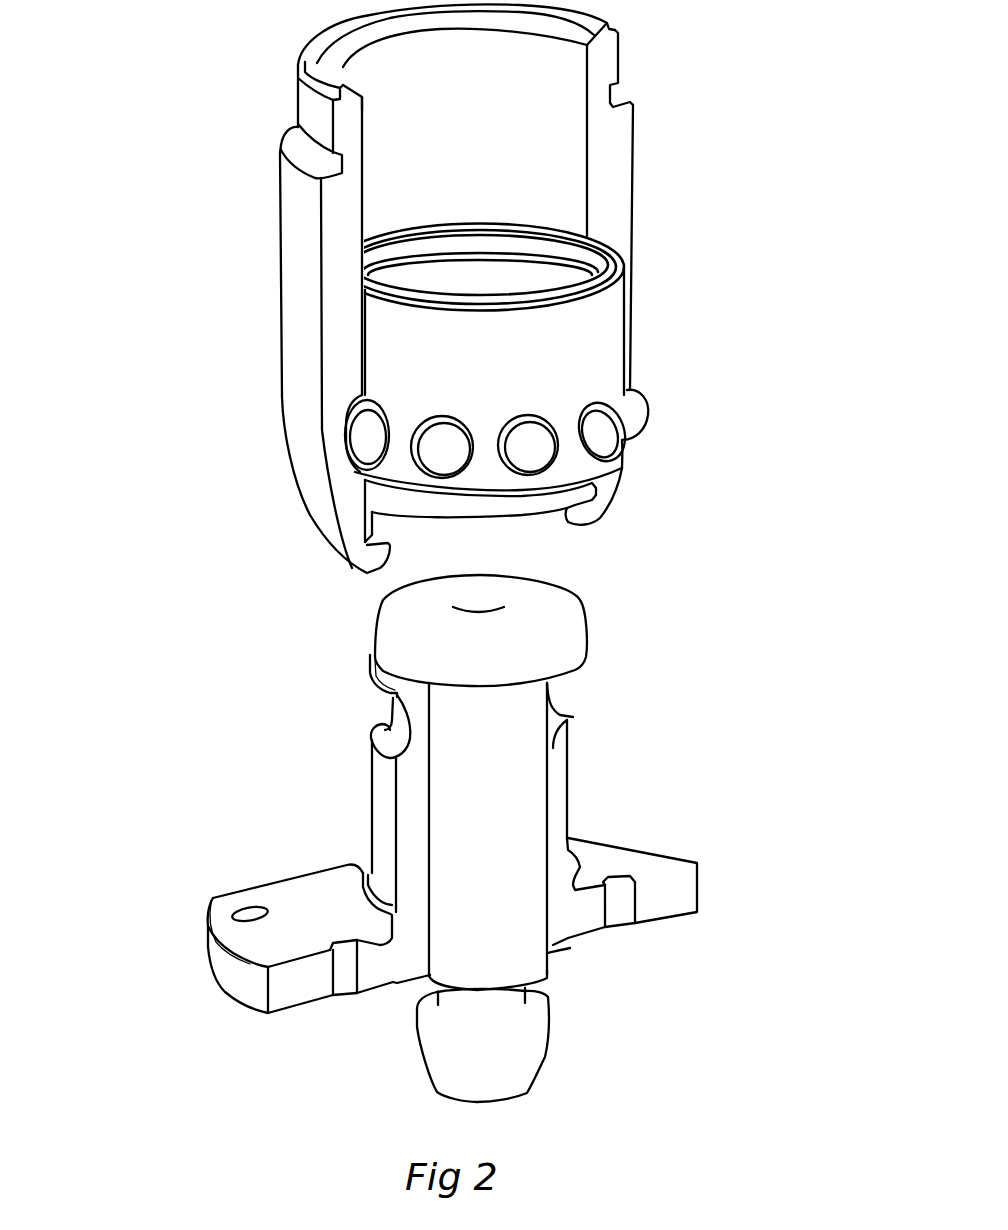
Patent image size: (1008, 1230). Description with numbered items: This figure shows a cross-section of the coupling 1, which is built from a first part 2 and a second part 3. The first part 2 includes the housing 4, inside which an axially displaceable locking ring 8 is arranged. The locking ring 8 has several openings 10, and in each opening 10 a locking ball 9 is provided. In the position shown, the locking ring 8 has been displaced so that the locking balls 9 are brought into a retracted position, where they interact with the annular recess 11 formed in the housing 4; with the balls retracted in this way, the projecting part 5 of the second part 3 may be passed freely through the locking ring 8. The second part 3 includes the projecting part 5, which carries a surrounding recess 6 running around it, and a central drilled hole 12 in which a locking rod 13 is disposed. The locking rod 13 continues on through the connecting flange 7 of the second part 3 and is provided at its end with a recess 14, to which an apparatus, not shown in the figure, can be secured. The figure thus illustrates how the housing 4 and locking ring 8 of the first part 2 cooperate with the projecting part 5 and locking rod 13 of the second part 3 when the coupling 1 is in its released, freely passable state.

The coupling 1 is at (266, 647).
The first part 2 is at (708, 135).
The second part 3 is at (677, 758).
The housing 4 is at (337, 280).
The projecting part 5 is at (383, 807).
The surrounding recess 6 is at (387, 735).
The connecting flange 7 is at (263, 943).
The locking ring 8 is at (603, 357).
The locking ball 9 is at (603, 442).
The openings 10 is at (455, 465).
The annular recess 11 is at (363, 471).
The central drilled hole 12 is at (573, 717).
The locking rod 13 is at (513, 1067).
The recess 14 is at (543, 985).